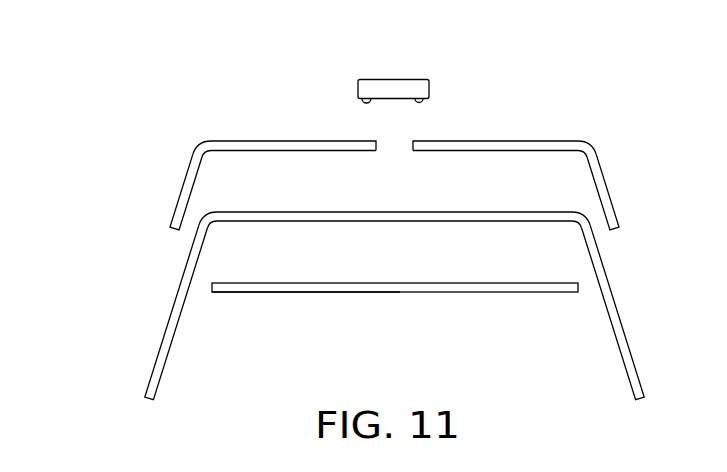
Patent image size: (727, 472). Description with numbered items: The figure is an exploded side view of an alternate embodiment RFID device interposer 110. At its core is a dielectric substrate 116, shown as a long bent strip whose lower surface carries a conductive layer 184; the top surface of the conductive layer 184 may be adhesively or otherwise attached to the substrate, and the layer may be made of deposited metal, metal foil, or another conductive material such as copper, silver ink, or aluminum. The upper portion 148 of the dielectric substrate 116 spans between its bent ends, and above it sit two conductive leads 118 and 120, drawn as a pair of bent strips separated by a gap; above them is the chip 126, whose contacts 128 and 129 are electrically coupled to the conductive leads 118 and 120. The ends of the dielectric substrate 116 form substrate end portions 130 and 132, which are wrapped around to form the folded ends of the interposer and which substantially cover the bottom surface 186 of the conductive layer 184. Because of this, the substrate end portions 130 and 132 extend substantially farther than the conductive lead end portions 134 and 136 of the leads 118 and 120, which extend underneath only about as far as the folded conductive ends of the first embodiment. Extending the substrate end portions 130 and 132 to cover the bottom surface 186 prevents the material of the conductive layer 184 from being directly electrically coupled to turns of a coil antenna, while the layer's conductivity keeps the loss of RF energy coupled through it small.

The interposer 110 is at (129, 95).
The dielectric substrate 116 is at (501, 203).
The conductive lead 118 is at (206, 97).
The conductive lead 120 is at (594, 116).
The chip 126 is at (392, 85).
The contact 128 is at (365, 101).
The contact 129 is at (423, 101).
The substrate end portion 130 is at (168, 357).
The substrate end portion 132 is at (620, 355).
The conductive lead end portion 134 is at (180, 203).
The conductive lead end portion 136 is at (612, 187).
The top portion of lower bracket 148 is at (455, 222).
The conductive layer 184 is at (367, 293).
The bottom surface 186 is at (313, 293).